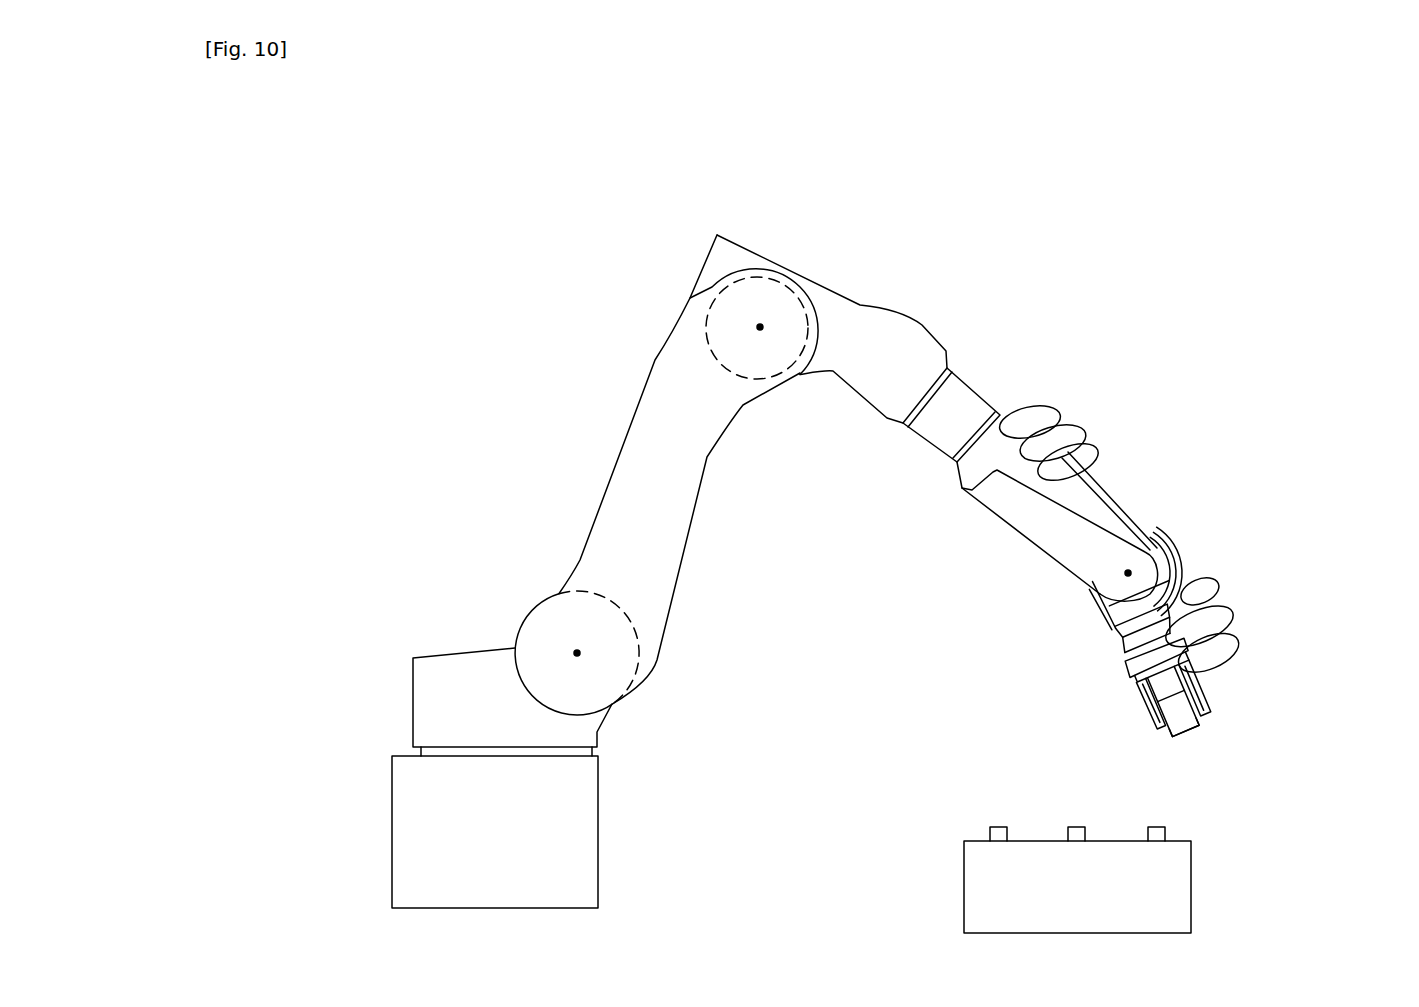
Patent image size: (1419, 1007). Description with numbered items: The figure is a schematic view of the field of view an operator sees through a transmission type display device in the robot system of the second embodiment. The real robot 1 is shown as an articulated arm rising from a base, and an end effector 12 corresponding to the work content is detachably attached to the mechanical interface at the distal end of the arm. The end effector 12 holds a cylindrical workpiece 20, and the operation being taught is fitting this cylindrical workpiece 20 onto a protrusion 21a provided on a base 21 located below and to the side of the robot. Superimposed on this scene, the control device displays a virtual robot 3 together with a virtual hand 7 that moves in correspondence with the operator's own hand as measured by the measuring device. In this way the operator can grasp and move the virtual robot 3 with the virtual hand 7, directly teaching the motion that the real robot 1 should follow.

The real robot 1 is at (741, 231).
The virtual robot 3 is at (920, 316).
The virtual hand 7 is at (1100, 432).
The end effector 12 is at (1210, 702).
The cylindrical workpiece 20 is at (1178, 737).
The base 21 is at (1190, 887).
The protrusion 21a is at (1085, 834).